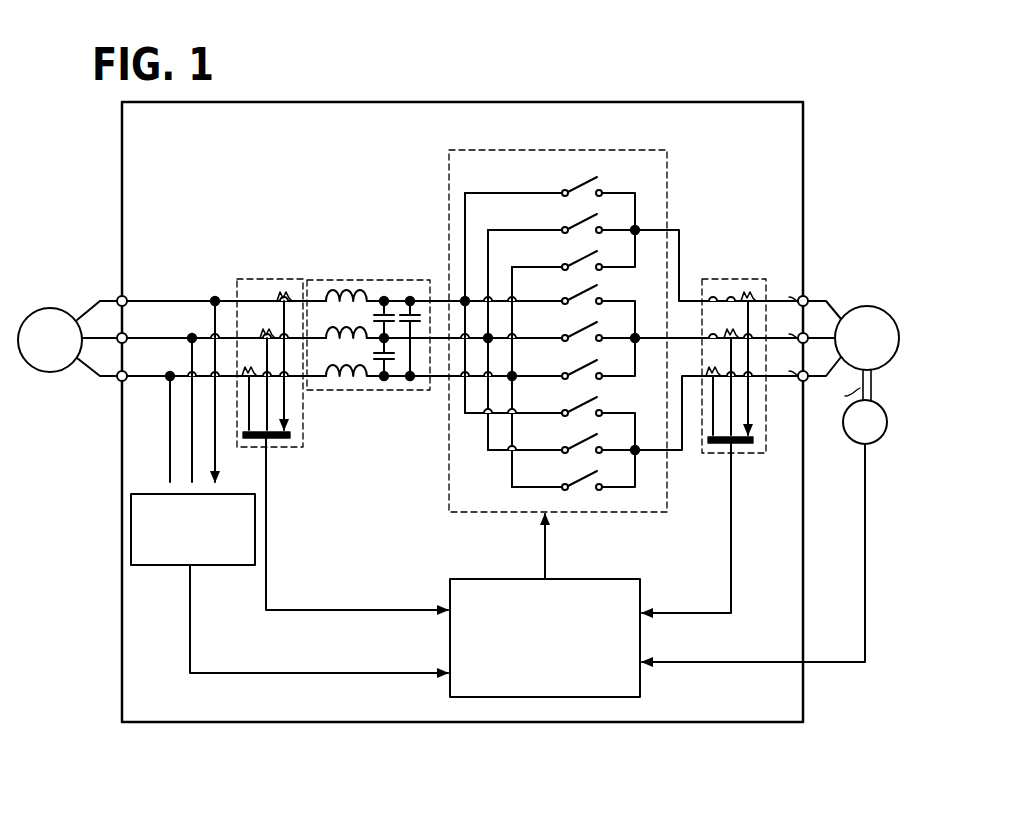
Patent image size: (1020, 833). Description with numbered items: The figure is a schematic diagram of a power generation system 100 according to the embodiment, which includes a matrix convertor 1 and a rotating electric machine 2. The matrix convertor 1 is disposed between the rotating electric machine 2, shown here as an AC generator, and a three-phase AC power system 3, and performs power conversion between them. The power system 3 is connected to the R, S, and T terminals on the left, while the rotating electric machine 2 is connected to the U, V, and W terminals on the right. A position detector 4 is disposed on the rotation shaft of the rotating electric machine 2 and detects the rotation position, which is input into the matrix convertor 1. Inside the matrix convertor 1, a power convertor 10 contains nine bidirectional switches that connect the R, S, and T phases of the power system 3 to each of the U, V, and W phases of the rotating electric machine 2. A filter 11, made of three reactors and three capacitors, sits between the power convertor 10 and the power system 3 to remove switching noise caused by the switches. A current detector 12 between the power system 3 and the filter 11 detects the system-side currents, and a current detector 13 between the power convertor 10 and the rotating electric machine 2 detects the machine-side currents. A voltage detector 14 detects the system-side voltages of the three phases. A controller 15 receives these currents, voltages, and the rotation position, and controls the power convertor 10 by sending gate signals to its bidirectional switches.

The matrix convertor 1 is at (745, 102).
The rotating electric machine 2 is at (866, 307).
The three-phase AC power system 3 is at (55, 310).
The position detector 4 is at (851, 440).
The power convertor 10 is at (590, 152).
The filter 11 is at (401, 283).
The current detector 12 is at (270, 283).
The current detector 13 is at (733, 283).
The voltage detector 14 is at (234, 495).
The controller 15 is at (606, 579).
The power generation system 100 is at (853, 228).